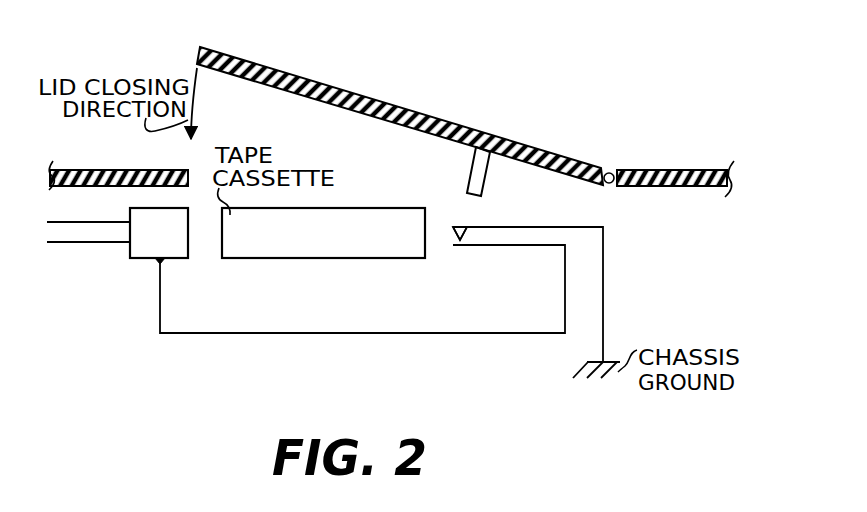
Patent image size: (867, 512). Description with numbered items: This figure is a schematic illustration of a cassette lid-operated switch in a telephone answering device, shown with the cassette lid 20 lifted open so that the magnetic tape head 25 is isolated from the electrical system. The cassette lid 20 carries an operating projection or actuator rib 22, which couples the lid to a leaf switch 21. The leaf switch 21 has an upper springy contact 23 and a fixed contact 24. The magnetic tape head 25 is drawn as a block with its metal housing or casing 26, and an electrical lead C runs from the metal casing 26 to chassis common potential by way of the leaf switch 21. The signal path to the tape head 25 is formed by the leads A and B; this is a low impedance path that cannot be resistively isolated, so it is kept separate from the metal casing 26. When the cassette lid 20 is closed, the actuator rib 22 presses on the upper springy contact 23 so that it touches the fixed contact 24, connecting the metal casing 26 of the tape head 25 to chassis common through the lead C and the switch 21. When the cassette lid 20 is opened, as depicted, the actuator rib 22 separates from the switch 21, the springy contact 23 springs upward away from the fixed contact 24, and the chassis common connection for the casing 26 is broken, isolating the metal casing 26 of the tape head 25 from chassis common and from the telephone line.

The cassette lid 20 is at (341, 86).
The leaf switch 21 is at (463, 268).
The actuator rib 22 is at (468, 173).
The upper springy contact 23 is at (489, 227).
The fixed contact 24 is at (477, 247).
The magnetic tape head 25 is at (120, 257).
The metal casing 26 is at (183, 261).
The signal path lead A is at (47, 223).
The signal path lead B is at (48, 242).
The electrical lead C is at (159, 305).